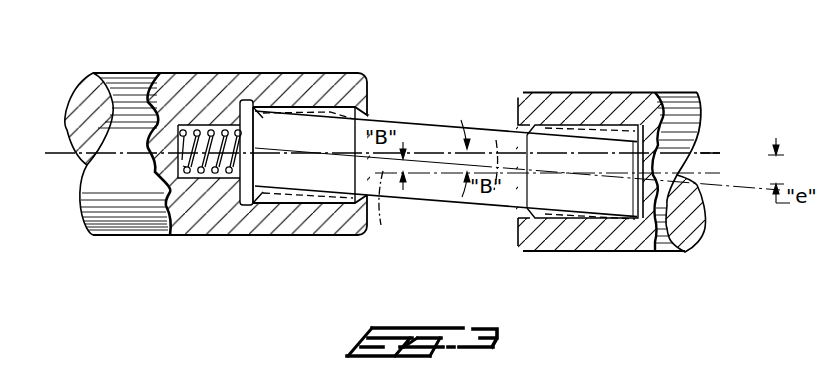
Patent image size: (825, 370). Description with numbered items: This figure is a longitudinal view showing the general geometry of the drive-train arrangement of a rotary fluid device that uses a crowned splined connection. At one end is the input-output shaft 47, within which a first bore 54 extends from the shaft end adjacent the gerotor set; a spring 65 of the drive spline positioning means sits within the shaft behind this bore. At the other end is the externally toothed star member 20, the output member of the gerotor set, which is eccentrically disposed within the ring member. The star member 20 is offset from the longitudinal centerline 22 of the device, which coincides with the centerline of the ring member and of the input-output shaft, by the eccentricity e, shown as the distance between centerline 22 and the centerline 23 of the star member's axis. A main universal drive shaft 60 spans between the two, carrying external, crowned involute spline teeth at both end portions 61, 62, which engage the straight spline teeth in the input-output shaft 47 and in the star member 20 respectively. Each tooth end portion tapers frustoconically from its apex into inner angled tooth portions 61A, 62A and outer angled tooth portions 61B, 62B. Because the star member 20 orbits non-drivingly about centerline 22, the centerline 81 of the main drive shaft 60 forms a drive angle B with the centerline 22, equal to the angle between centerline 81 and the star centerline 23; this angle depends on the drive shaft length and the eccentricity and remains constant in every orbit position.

The star member 20 is at (603, 92).
The longitudinal centerline of the device 22 is at (722, 153).
The centerline of the star member 23 is at (393, 207).
The input-output shaft 47 is at (290, 73).
The first bore 54 is at (246, 110).
The main universal drive shaft 60 is at (426, 126).
The crowned spline tooth end portion 61 is at (316, 166).
The inner angled tooth portion 61A is at (341, 112).
The outer angled tooth portion 61B is at (317, 204).
The crowned spline tooth end portion 62 is at (575, 182).
The inner angled tooth portion 62A is at (553, 128).
The outer angled tooth portion 62B is at (602, 219).
The spring 65 is at (206, 129).
The centerline of the main drive shaft 81 is at (496, 140).